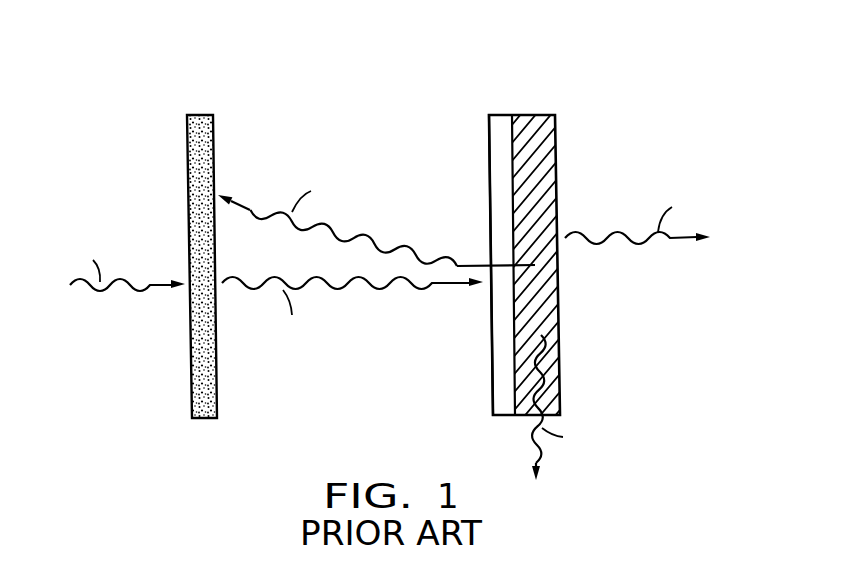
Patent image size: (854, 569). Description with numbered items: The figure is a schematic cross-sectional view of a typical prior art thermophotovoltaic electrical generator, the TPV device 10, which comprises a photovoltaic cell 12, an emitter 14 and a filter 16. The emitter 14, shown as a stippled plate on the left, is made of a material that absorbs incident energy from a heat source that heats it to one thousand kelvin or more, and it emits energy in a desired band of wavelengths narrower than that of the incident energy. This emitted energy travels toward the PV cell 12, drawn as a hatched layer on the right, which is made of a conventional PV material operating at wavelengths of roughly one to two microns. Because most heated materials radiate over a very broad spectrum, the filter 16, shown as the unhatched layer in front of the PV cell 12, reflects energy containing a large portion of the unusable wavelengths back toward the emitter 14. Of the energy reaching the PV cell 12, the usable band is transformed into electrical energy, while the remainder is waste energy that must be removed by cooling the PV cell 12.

The TPV device 10 is at (671, 75).
The photovoltaic cell 12 is at (537, 148).
The emitter 14 is at (196, 121).
The filter 16 is at (500, 142).